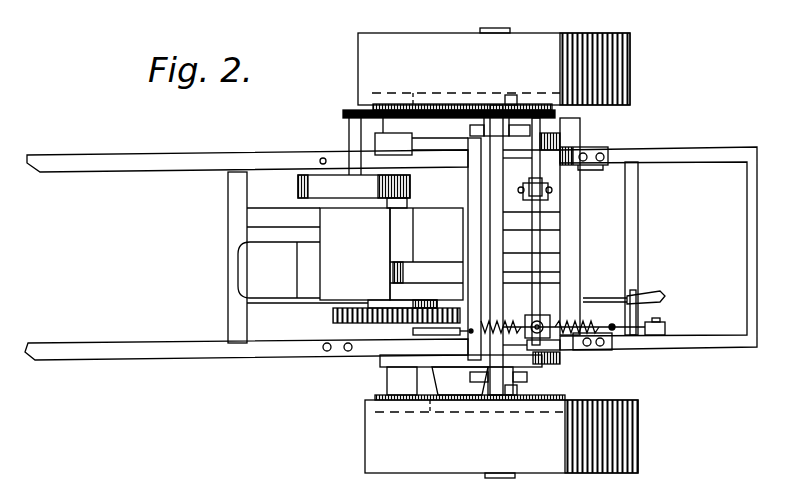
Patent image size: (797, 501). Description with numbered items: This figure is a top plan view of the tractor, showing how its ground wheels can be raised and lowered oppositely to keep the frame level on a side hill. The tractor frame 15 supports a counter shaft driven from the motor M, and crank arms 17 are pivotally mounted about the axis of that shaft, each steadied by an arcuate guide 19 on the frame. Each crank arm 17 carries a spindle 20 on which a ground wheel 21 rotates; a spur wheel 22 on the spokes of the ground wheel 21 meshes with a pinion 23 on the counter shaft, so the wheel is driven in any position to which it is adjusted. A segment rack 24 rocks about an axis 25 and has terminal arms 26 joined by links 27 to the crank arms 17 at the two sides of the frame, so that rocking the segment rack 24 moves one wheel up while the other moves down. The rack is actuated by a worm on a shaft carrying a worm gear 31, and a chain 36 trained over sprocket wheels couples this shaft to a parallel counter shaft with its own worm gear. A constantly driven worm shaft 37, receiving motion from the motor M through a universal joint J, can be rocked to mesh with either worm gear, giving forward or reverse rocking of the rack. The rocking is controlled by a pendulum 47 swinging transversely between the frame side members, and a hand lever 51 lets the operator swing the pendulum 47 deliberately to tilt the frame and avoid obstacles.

The tractor frame 15 is at (680, 152).
The crank arm 17 is at (445, 155).
The arcuate guide 19 is at (562, 140).
The spindle 20 is at (525, 105).
The ground wheel 21 is at (615, 83).
The spur wheel 22 is at (448, 100).
The pinion 23 is at (388, 92).
The segment rack 24 is at (480, 215).
The axis 25 is at (478, 240).
The terminal arm 26 is at (498, 112).
The link 27 is at (511, 98).
The worm gear 31 is at (480, 330).
The chain 36 is at (516, 316).
The worm shaft 37 is at (565, 345).
The pendulum 47 is at (548, 265).
The hand lever 51 is at (666, 298).
The universal joint J is at (548, 190).
The motor M is at (324, 239).